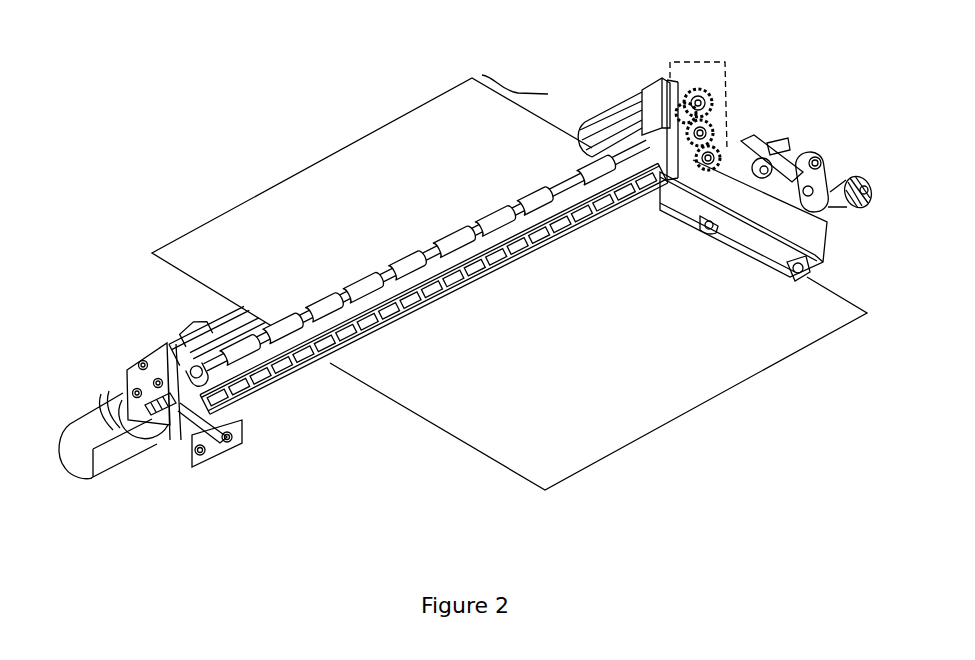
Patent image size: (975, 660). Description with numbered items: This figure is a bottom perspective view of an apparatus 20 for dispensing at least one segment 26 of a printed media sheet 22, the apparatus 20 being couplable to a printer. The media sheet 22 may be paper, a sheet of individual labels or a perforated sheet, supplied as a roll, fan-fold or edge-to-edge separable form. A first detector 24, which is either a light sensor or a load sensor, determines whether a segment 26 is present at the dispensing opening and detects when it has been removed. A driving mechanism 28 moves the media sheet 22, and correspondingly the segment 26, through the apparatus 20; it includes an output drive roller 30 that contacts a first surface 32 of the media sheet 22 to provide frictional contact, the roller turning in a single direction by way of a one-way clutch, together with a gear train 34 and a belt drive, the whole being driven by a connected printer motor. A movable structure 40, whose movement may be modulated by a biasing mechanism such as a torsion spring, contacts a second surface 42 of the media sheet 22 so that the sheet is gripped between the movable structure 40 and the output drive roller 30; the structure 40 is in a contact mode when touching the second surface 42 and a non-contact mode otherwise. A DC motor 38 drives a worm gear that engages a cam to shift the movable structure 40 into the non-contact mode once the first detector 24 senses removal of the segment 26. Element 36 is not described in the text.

The apparatus 20 is at (287, 428).
The media sheet 22 is at (727, 373).
The first detector 24 is at (585, 210).
The segment 26 is at (583, 124).
The driving mechanism 28 is at (738, 143).
The output drive roller 30 is at (343, 303).
The first surface 32 is at (472, 407).
The gear train 34 is at (670, 63).
The fastener 36 is at (849, 227).
The DC motor 38 is at (110, 430).
The movable structure 40 is at (217, 320).
The second surface 42 is at (313, 163).